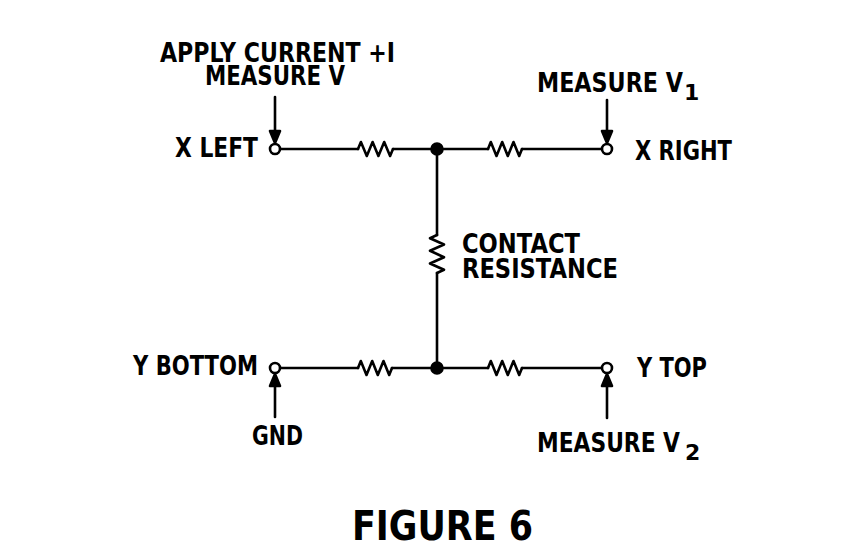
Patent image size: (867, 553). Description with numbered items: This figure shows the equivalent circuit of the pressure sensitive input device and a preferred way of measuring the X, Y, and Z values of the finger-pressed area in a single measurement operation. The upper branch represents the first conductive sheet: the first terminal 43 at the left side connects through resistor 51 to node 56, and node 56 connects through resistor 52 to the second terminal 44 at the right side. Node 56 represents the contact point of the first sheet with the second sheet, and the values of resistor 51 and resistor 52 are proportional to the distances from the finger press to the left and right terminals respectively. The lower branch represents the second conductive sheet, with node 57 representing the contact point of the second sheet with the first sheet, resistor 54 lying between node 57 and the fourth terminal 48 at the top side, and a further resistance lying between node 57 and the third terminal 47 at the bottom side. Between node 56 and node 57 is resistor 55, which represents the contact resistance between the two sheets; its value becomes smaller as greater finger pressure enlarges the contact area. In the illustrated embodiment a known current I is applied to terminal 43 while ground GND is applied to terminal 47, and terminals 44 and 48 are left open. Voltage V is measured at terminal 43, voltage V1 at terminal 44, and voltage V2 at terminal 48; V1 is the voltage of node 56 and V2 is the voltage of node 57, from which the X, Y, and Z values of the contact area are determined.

The first terminal 43 is at (277, 154).
The second terminal 44 is at (610, 154).
The third terminal 47 is at (280, 363).
The fourth terminal 48 is at (612, 364).
The resistor 51 is at (360, 146).
The resistor 52 is at (522, 147).
The resistor 54 is at (522, 365).
The resistor 55 is at (446, 240).
The node 56 is at (440, 147).
The node 57 is at (440, 365).